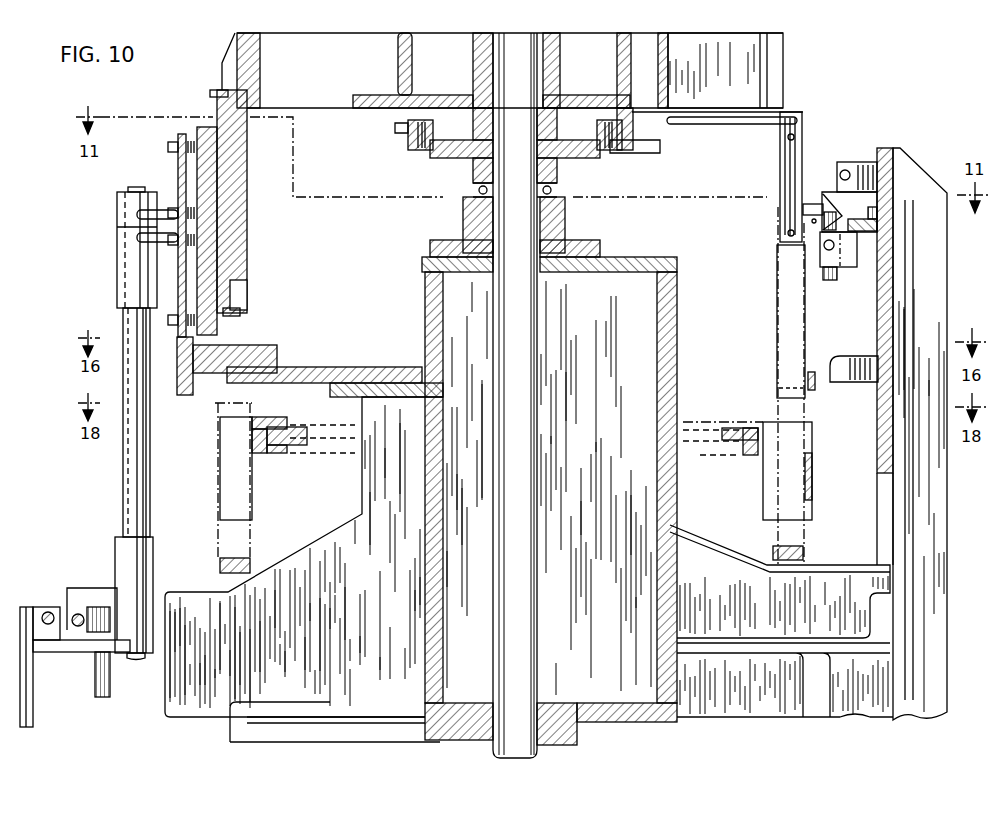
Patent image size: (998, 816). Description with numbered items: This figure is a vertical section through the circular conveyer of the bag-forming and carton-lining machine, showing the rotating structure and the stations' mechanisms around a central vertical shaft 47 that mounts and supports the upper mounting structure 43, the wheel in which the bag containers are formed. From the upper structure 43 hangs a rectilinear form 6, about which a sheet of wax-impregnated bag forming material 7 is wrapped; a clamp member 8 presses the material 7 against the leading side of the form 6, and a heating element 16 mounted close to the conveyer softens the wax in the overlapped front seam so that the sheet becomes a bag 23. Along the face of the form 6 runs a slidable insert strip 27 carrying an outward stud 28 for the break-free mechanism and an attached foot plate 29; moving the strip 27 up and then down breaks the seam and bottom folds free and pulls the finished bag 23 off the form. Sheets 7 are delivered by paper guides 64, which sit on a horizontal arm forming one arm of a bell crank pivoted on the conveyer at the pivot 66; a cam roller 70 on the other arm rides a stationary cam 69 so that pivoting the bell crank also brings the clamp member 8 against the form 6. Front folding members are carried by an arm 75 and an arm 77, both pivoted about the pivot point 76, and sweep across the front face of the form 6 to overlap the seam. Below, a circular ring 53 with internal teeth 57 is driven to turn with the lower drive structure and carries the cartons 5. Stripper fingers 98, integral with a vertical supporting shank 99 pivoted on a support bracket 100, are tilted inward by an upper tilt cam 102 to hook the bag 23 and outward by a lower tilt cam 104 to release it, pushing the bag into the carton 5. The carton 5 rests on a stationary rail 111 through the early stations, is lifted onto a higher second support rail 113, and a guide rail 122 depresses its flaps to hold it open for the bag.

The carton 5 is at (218, 531).
The form 6 is at (240, 160).
The bag forming material 7 is at (249, 128).
The clamp member 8 is at (786, 170).
The heating element 16 is at (245, 240).
The bag 23 is at (777, 340).
The insert strip 27 is at (222, 183).
The stud 28 is at (212, 92).
The foot plate 29 is at (236, 300).
The upper mounting structure 43 is at (775, 85).
The vertical shaft 47 is at (528, 440).
The circular ring 53 is at (275, 453).
The internal teeth 57 is at (290, 447).
The paper guides 64 is at (722, 126).
The pivot 66 is at (640, 150).
The stationary cam 69 is at (455, 160).
The cam roller 70 is at (410, 152).
The arm 75 is at (137, 237).
The pivot point 76 is at (137, 190).
The arm 77 is at (137, 214).
The stripper fingers 98 is at (809, 204).
The vertical supporting shank 99 is at (820, 226).
The support bracket 100 is at (843, 256).
The upper tilt cam 102 is at (829, 192).
The lower tilt cam 104 is at (840, 358).
The stationary rail 111 is at (222, 565).
The second support rail 113 is at (805, 553).
The guide rail 122 is at (815, 392).